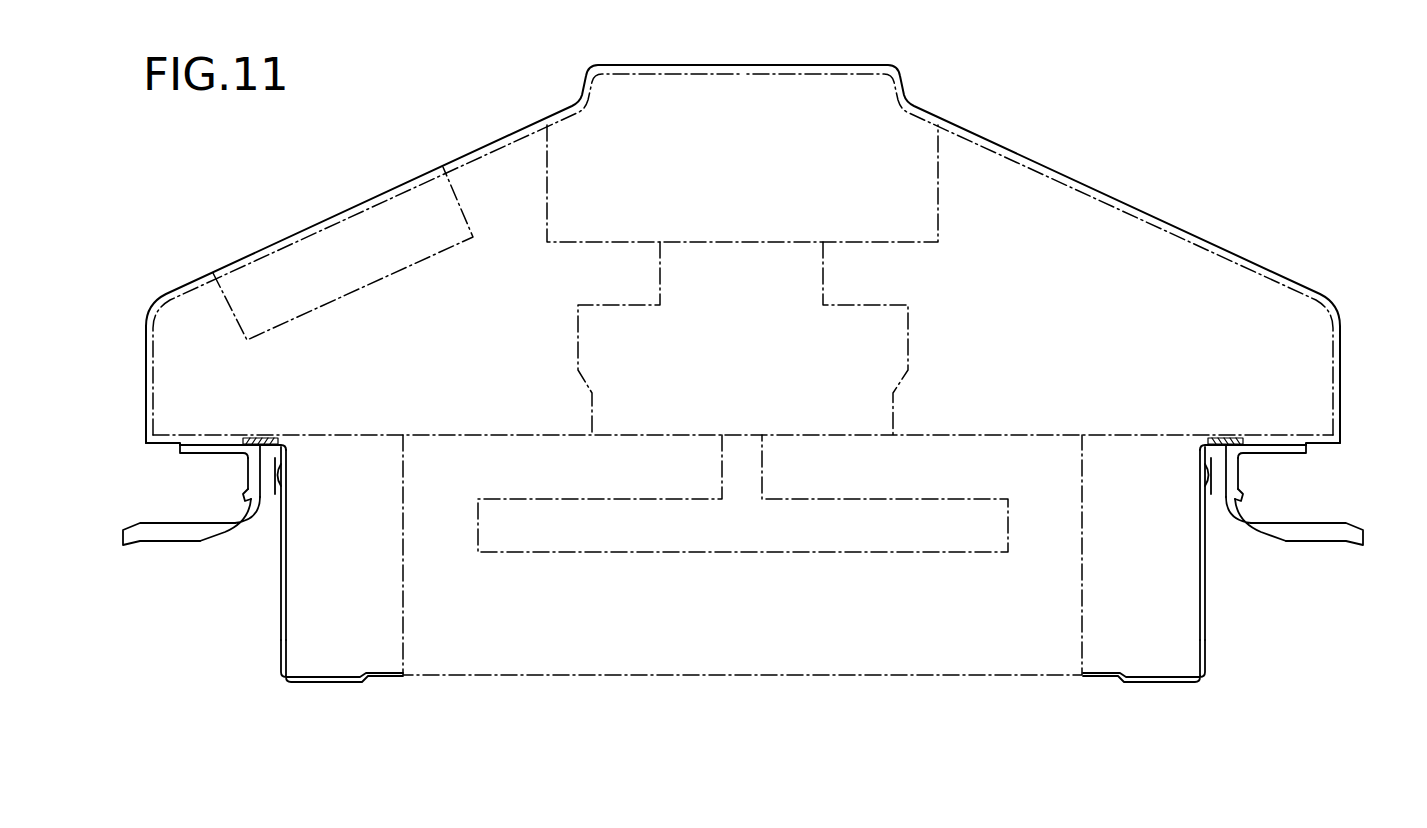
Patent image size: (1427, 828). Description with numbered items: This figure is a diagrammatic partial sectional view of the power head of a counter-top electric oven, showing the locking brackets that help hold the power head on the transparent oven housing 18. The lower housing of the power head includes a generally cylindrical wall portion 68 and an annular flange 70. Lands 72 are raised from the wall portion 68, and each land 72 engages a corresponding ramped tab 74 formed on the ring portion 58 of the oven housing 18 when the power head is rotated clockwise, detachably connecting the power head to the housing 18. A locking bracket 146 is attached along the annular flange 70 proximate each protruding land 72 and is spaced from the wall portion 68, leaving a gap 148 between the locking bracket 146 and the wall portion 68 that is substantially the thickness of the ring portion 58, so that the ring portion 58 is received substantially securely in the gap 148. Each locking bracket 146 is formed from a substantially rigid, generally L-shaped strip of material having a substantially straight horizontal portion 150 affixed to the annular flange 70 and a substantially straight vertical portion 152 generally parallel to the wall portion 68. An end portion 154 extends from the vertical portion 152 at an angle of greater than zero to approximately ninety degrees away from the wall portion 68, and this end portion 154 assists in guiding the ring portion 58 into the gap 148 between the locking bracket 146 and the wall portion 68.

The oven housing 18 is at (123, 547).
The ring portion 58 is at (268, 493).
The wall portion 68 is at (281, 642).
The annular flange 70 is at (164, 455).
The land 72 is at (286, 474).
The ramped tab 74 is at (279, 447).
The locking bracket 146 is at (232, 458).
The gap 148 is at (280, 500).
The horizontal portion 150 is at (188, 447).
The vertical portion 152 is at (246, 471).
The end portion 154 is at (245, 515).